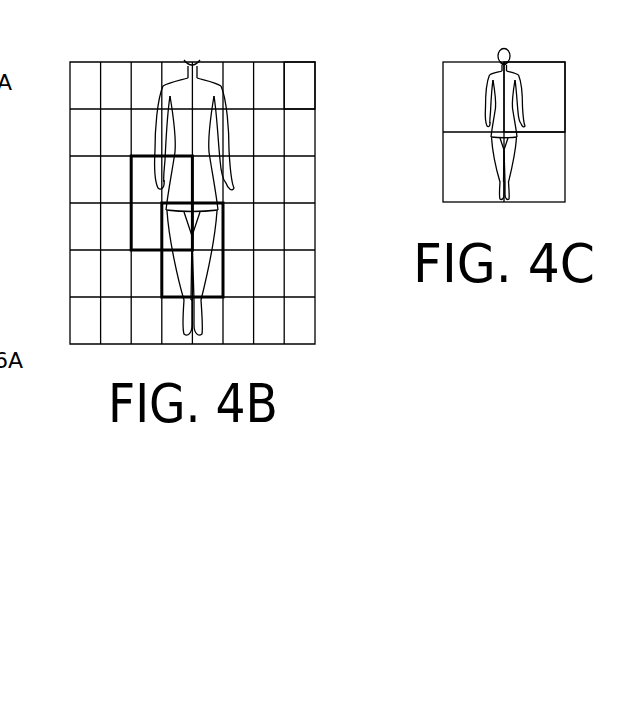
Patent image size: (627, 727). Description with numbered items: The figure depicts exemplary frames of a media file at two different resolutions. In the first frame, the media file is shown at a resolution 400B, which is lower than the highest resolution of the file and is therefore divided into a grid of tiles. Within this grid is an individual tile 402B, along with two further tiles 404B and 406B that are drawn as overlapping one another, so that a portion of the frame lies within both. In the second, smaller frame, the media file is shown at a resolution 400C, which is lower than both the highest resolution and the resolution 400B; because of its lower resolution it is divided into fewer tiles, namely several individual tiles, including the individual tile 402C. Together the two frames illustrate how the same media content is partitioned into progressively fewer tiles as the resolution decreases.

In FIG. 4B, the resolution 400B is at (265, 62).
In FIG. 4B, the individual tile 402B is at (302, 88).
In FIG. 4B, the tile 404B is at (131, 221).
In FIG. 4B, the tile 406B is at (224, 274).
In FIG. 4C, the resolution 400C is at (472, 62).
In FIG. 4C, the individual tile 402C is at (545, 88).